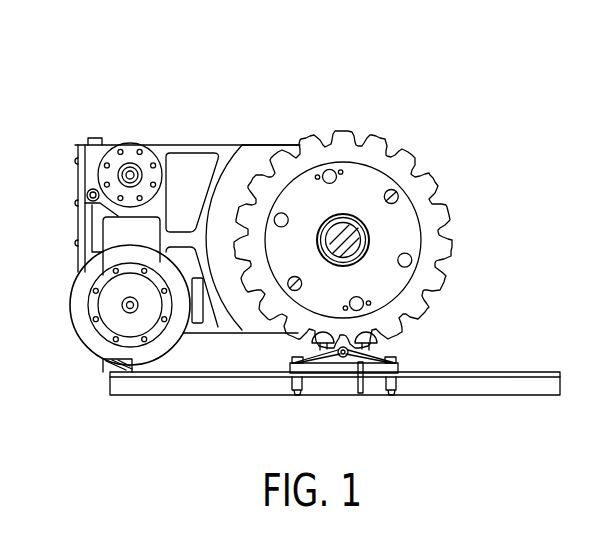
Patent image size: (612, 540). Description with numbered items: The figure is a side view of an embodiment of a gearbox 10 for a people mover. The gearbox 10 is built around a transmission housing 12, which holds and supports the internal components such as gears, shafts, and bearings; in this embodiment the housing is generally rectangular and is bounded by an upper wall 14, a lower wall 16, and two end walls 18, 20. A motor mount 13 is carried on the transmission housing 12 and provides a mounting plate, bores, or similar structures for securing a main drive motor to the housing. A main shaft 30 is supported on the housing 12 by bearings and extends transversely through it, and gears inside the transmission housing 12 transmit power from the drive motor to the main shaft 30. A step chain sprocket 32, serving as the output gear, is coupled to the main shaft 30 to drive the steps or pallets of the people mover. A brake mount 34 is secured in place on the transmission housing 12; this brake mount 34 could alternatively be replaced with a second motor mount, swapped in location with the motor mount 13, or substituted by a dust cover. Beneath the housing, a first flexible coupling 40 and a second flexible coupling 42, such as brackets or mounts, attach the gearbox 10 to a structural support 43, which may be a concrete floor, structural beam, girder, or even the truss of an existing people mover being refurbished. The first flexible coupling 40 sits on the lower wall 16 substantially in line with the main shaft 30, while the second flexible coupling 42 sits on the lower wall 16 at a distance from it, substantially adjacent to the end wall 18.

The gearbox 10 is at (366, 70).
The transmission housing 12 is at (175, 145).
The motor mount 13 is at (88, 335).
The upper wall 14 is at (262, 145).
The lower wall 16 is at (256, 335).
The end wall 18 is at (78, 217).
The end wall 20 is at (402, 222).
The main shaft 30 is at (366, 220).
The step chain sprocket 32 is at (436, 278).
The brake mount 34 is at (101, 164).
The first flexible coupling 40 is at (329, 357).
The second flexible coupling 42 is at (132, 369).
The structural support 43 is at (538, 383).